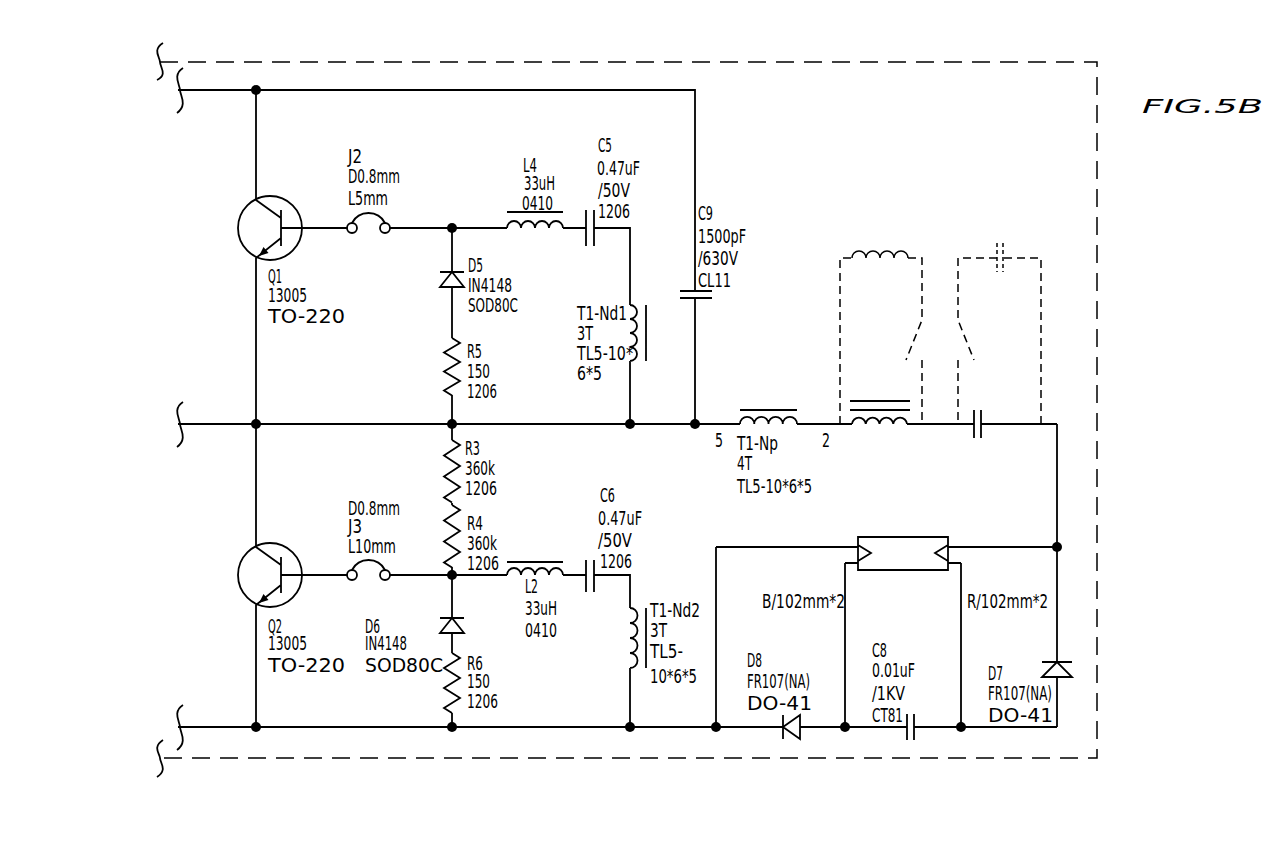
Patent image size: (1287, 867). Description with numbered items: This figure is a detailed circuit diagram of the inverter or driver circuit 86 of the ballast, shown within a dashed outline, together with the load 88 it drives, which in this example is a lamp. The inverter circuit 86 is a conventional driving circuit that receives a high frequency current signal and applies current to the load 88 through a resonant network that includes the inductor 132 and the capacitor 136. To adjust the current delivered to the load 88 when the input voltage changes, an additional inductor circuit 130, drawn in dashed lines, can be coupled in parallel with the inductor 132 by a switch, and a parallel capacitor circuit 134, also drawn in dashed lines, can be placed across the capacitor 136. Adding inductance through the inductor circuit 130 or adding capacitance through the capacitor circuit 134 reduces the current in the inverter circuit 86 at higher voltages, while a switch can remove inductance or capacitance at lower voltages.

The inverter circuit 86 is at (628, 444).
The load 88 is at (907, 554).
The inductor circuit 130 is at (816, 337).
The inductor L3 132 is at (852, 454).
The capacitor circuit 134 is at (954, 311).
The capacitor C7 136 is at (1006, 449).